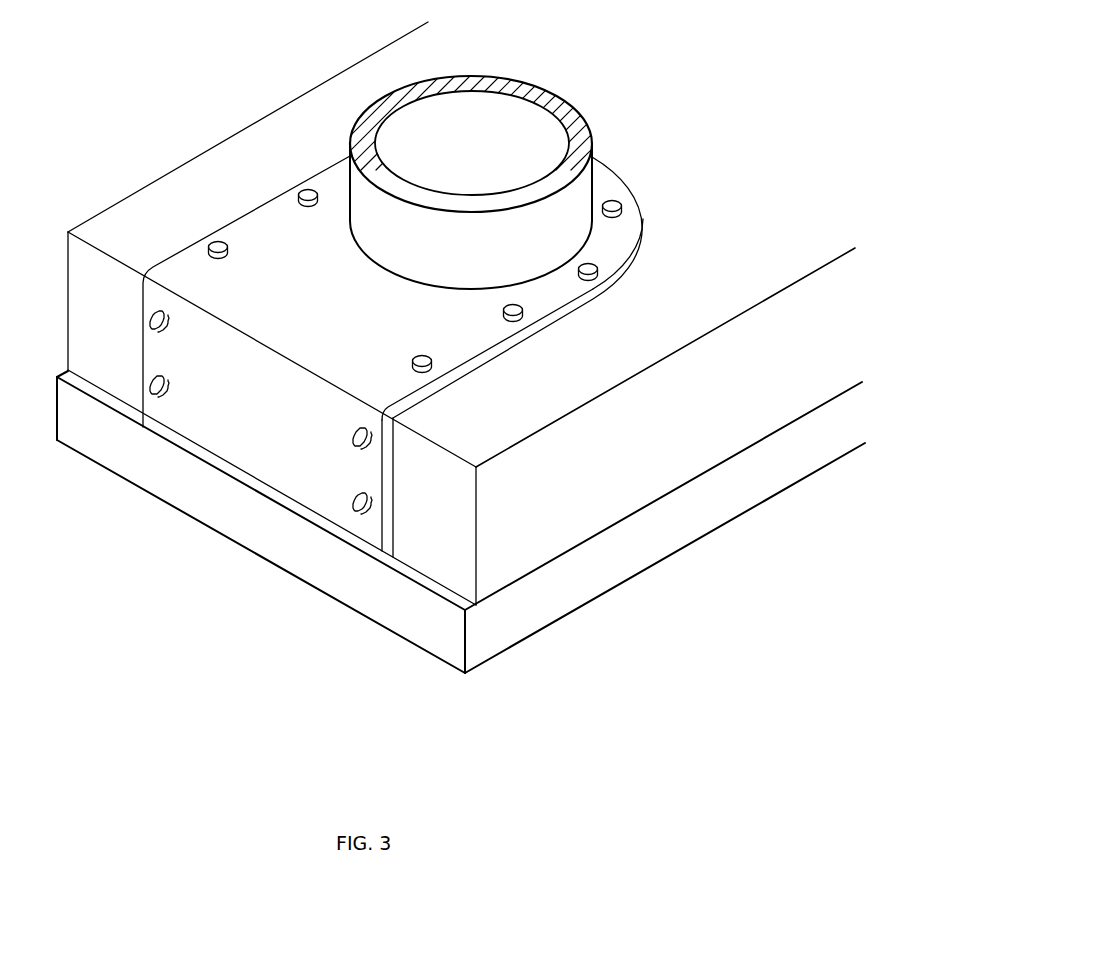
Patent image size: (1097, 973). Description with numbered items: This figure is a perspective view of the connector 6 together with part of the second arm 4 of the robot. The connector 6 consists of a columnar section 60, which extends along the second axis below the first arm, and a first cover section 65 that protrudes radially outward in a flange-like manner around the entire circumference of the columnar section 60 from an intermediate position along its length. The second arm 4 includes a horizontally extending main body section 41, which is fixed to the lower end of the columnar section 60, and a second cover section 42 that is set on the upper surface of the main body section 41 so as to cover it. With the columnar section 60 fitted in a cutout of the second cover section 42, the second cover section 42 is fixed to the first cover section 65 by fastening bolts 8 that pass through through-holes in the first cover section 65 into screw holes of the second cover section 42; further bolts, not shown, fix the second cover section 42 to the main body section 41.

The second arm 4 is at (461, 383).
The main body section 41 is at (437, 629).
The second cover section 42 is at (461, 335).
The connector 6 is at (536, 210).
The columnar section 60 is at (598, 178).
The first cover section 65 is at (643, 231).
The fastening bolts 8 is at (216, 242).